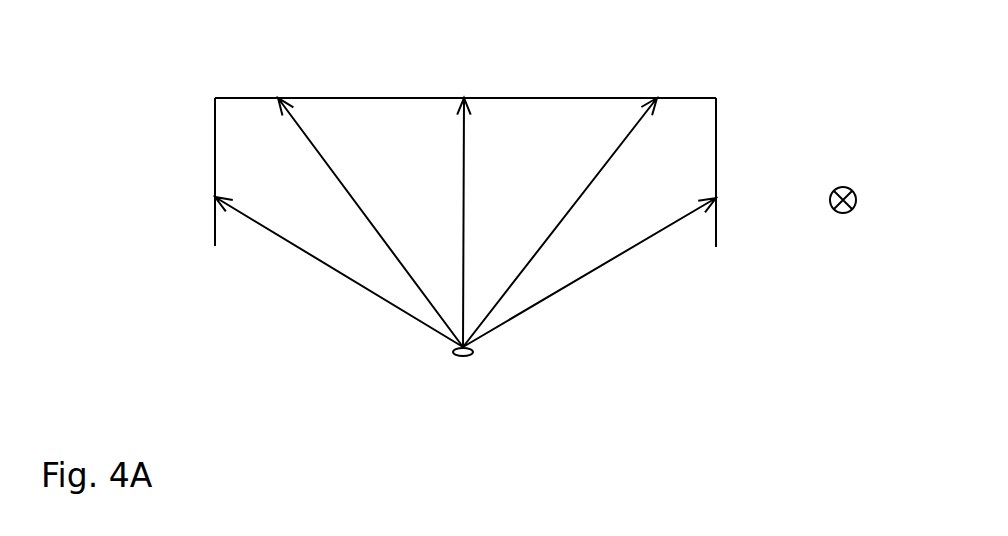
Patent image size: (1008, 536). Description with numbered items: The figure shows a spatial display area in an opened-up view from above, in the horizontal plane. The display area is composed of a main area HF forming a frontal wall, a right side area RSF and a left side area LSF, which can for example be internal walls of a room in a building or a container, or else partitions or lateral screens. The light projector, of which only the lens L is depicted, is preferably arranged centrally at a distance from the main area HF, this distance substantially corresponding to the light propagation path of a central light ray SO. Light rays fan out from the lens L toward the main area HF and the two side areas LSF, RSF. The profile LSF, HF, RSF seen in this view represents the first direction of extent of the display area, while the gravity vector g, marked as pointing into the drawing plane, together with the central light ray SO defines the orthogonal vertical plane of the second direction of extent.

The main area HF is at (492, 98).
The left side area LSF is at (215, 140).
The right side area RSF is at (720, 150).
The central light ray SO is at (448, 169).
The lens L is at (465, 356).
The gravity vector g is at (859, 200).